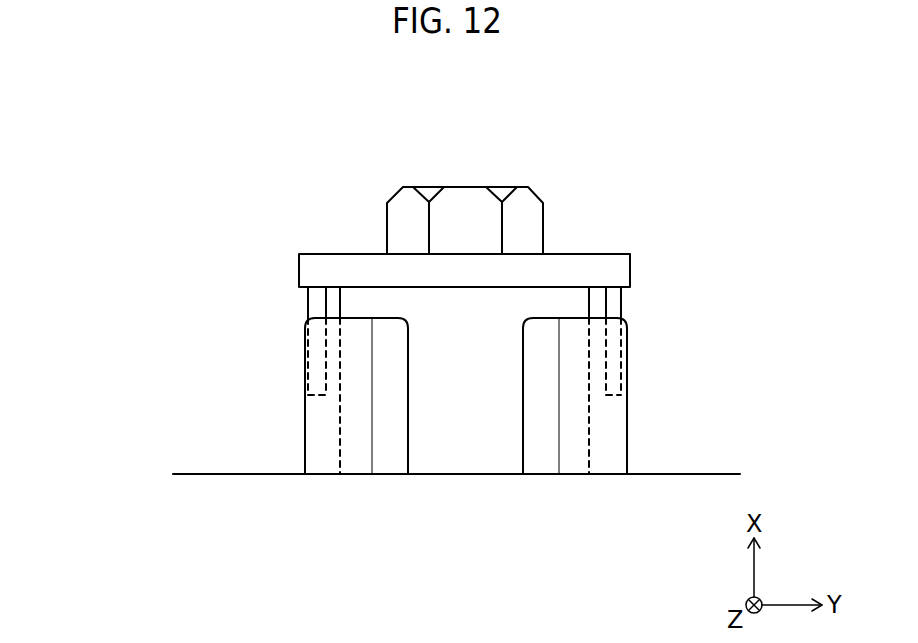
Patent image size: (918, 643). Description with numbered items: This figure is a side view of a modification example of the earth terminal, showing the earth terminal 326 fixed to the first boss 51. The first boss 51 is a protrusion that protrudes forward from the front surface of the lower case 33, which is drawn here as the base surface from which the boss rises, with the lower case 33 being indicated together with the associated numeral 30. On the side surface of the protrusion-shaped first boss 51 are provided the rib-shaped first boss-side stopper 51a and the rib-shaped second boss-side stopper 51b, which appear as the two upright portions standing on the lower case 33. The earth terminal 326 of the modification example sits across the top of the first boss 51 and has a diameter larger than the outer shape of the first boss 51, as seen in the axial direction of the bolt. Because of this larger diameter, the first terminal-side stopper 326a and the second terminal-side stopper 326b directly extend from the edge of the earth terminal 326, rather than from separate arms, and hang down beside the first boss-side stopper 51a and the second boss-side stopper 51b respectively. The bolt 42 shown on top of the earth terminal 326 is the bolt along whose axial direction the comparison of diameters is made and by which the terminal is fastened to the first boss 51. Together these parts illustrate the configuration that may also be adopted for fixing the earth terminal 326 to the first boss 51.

The bolt 42 is at (465, 198).
The earth terminal 326 is at (318, 252).
The first terminal-side stopper 326a is at (616, 302).
The second terminal-side stopper 326b is at (313, 303).
The first boss 51 is at (463, 321).
The first boss-side stopper 51a is at (620, 446).
The second boss-side stopper 51b is at (310, 448).
The lower case 33 is at (208, 474).
The base 30 is at (415, 441).